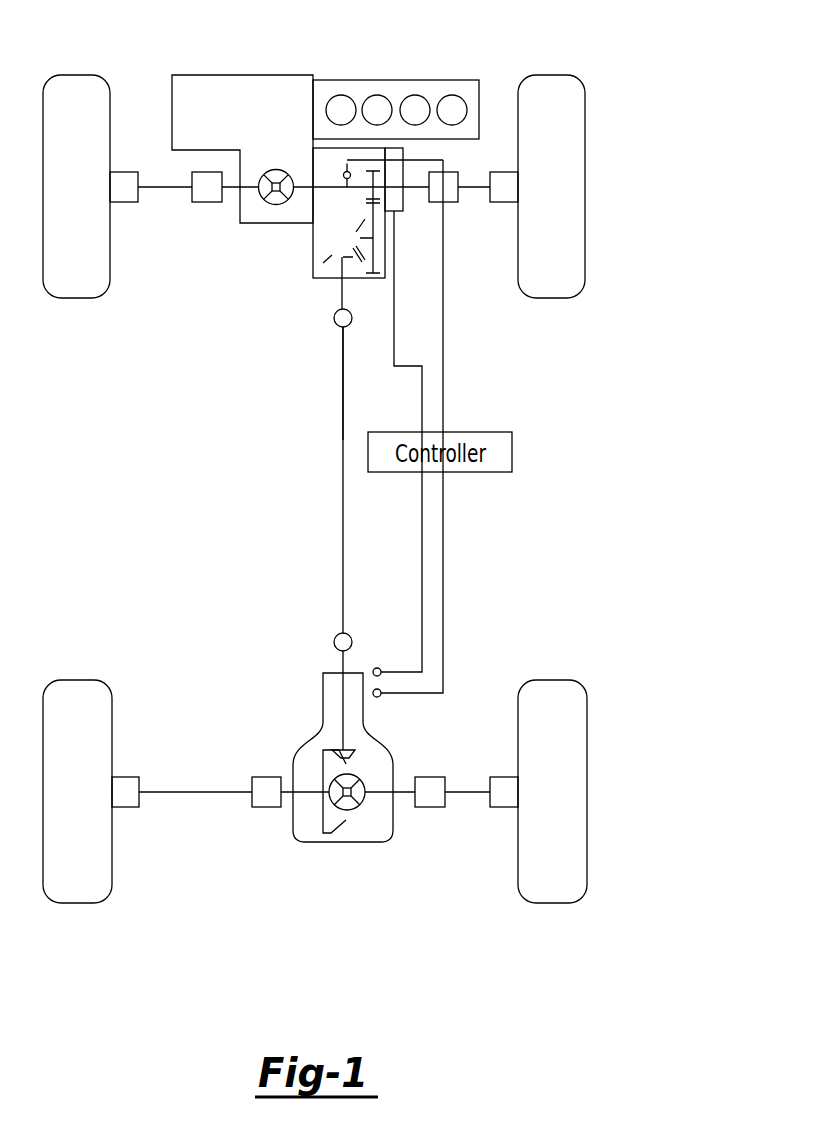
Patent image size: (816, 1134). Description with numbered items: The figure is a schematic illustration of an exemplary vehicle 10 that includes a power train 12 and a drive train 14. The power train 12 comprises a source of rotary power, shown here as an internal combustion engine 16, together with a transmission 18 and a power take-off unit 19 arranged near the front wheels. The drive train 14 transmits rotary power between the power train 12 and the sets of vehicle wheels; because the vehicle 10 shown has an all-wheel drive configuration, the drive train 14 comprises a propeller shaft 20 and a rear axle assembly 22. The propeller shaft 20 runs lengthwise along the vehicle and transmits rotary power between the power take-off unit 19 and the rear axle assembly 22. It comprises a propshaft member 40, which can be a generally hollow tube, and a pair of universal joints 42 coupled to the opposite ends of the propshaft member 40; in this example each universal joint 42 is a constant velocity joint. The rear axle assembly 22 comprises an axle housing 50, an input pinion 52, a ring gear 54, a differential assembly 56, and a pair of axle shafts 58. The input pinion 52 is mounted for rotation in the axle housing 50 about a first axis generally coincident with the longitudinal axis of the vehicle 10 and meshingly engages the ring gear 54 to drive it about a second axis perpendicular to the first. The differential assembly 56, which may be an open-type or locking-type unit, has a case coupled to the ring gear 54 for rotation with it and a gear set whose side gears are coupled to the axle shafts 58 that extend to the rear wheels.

The vehicle 10 is at (586, 388).
The power train 12 is at (345, 141).
The drive train 14 is at (281, 503).
The internal combustion engine 16 is at (397, 80).
The transmission 18 is at (243, 75).
The power take-off unit 19 is at (296, 262).
The propeller shaft 20 is at (341, 524).
The rear axle assembly 22 is at (314, 784).
The propshaft member 40 is at (343, 407).
The universal joint 42 is at (334, 318).
The axle housing 50 is at (348, 843).
The input pinion 52 is at (358, 757).
The ring gear 54 is at (325, 763).
The differential assembly 56 is at (365, 803).
The axle shaft 58 is at (192, 792).